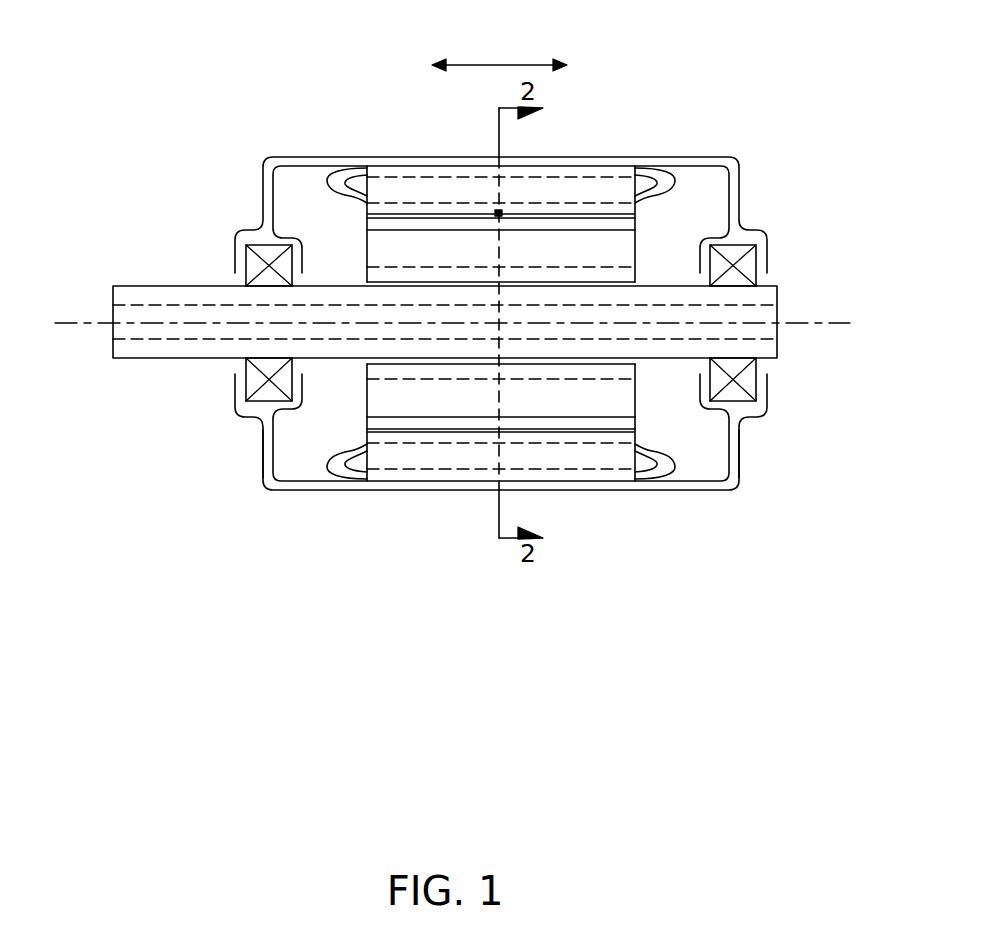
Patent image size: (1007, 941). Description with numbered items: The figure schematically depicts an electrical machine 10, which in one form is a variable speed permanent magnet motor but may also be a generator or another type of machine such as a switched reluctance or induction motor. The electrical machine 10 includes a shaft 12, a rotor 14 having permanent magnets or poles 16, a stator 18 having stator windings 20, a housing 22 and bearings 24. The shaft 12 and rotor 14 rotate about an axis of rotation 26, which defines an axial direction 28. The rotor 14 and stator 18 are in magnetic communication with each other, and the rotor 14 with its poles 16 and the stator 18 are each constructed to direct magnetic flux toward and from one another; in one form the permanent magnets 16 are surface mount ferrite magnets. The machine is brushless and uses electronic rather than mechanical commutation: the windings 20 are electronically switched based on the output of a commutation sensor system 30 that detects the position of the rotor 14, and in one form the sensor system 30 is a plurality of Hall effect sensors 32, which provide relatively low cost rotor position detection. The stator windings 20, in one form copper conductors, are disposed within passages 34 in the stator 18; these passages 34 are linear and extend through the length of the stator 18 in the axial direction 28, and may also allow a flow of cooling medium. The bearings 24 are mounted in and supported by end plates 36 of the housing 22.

The electrical machine 10 is at (175, 114).
The shaft 12 is at (130, 286).
The rotor 14 is at (637, 398).
The permanent magnets 16 is at (637, 224).
The stator 18 is at (363, 207).
The stator windings 20 is at (670, 172).
The housing 22 is at (617, 157).
The bearings 24 is at (235, 270).
The axis of rotation 26 is at (72, 323).
The axial direction 28 is at (505, 65).
The commutation sensor system 30 is at (404, 132).
The Hall effect sensors 32 is at (503, 213).
The passages 34 is at (613, 469).
The end plates 36 is at (263, 456).